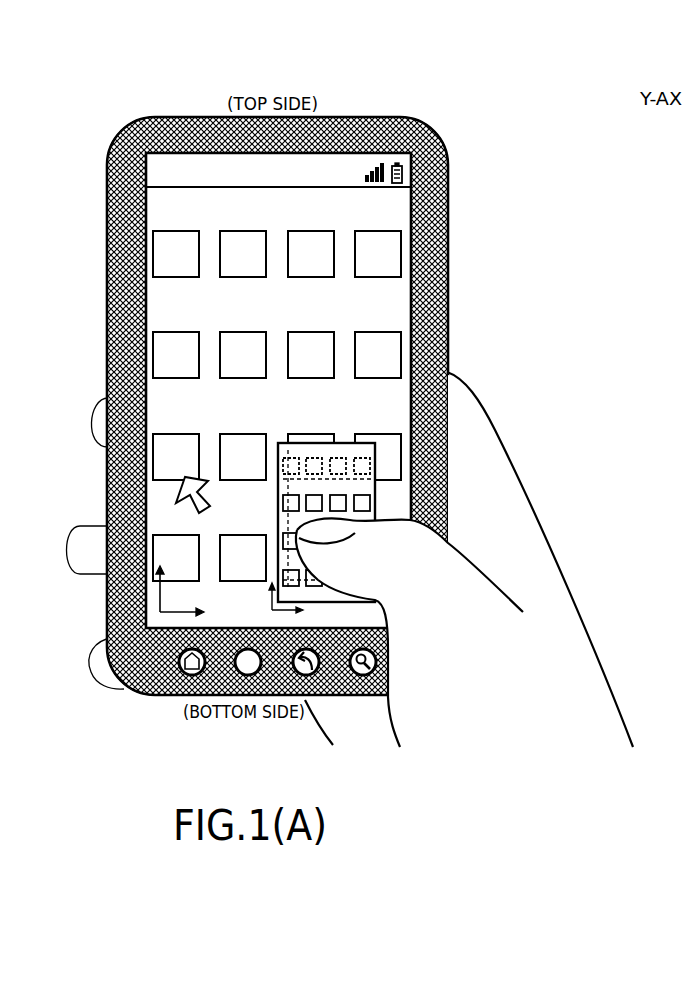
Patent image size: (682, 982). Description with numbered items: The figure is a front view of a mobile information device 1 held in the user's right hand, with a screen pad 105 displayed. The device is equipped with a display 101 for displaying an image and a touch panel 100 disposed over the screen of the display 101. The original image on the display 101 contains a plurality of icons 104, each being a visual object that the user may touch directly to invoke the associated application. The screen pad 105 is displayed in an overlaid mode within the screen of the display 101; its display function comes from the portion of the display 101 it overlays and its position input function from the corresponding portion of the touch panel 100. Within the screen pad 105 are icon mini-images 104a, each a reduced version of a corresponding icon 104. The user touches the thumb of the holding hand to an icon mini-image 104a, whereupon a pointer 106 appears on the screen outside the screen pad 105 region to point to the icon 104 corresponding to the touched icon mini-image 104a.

The mobile information device 1 is at (332, 117).
The touch panel 100 is at (397, 202).
The display 101 is at (412, 290).
The icon 104 is at (160, 332).
The icon mini-image 104a is at (368, 458).
The screen pad 105 is at (317, 442).
The pointer 106 is at (178, 490).